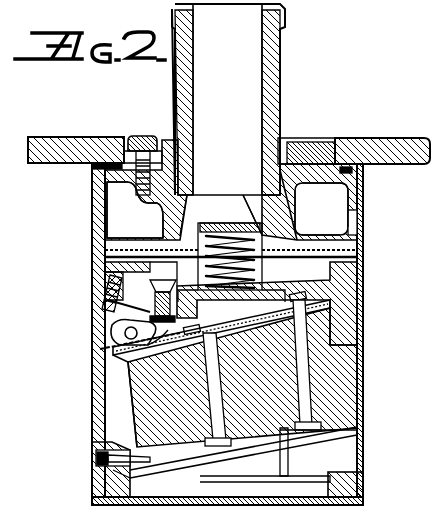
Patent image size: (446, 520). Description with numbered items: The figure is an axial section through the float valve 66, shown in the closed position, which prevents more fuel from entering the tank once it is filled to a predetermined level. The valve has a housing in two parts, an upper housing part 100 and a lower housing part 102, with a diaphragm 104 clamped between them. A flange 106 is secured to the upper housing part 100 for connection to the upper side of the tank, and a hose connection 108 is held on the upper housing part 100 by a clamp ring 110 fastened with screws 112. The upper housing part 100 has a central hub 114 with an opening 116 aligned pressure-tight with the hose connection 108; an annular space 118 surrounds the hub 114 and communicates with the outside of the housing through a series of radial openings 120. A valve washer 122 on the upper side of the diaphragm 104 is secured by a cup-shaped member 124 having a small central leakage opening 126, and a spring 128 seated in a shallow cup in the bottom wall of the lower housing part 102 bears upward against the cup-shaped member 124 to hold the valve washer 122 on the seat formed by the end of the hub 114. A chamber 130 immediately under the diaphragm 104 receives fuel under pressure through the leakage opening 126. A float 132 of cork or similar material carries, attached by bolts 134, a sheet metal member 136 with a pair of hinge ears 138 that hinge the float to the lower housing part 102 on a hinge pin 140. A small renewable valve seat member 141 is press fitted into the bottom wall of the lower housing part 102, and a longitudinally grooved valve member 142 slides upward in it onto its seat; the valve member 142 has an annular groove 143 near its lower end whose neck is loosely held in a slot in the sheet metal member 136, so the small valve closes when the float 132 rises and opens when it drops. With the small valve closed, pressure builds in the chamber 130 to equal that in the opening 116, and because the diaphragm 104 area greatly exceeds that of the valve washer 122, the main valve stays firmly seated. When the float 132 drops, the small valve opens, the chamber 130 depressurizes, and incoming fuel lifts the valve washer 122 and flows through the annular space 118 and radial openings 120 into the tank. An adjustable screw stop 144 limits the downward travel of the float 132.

The float valve 66 is at (385, 225).
The upper housing part 100 is at (355, 177).
The lower housing part 102 is at (362, 280).
The diaphragm 104 is at (92, 262).
The flange 106 is at (380, 142).
The hose connection 108 is at (278, 52).
The clamp ring 110 is at (306, 140).
The screws 112 is at (141, 135).
The central hub 114 is at (302, 210).
The opening 116 is at (212, 218).
The annular space 118 is at (118, 200).
The radial openings 120 is at (100, 220).
The valve washer 122 is at (295, 240).
The cup-shaped member 124 is at (245, 225).
The leakage opening 126 is at (227, 225).
The spring 128 is at (278, 270).
The chamber 130 is at (95, 280).
The float 132 is at (360, 362).
The bolts 134 is at (313, 370).
The sheet metal member 136 is at (227, 307).
The hinge ears 138 is at (108, 330).
The hinge pin 140 is at (130, 340).
The valve seat member 141 is at (140, 348).
The valve member 142 is at (140, 357).
The annular groove 143 is at (172, 360).
The adjustable screw stop 144 is at (93, 458).